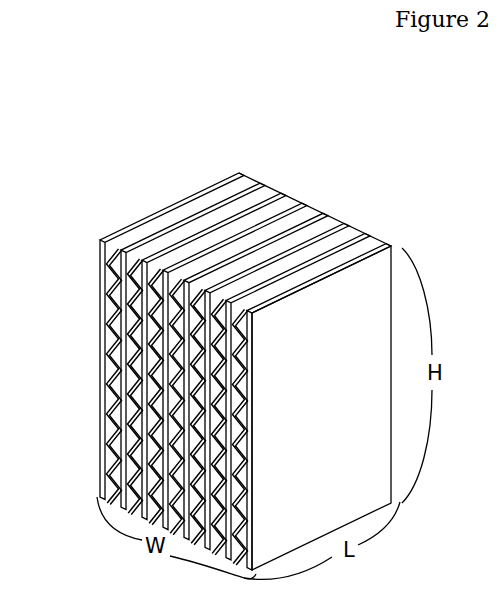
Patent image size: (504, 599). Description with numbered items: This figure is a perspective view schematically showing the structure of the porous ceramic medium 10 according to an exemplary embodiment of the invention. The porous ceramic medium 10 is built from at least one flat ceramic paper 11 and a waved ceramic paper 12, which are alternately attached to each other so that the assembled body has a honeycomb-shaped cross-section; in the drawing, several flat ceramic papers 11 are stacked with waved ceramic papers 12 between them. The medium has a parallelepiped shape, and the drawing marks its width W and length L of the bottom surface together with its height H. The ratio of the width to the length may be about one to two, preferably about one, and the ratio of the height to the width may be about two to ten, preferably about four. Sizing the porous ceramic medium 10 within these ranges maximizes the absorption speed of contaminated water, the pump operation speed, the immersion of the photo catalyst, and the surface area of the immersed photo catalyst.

The porous ceramic medium 10 is at (156, 160).
The flat ceramic paper 11 is at (102, 268).
The waved ceramic paper 12 is at (115, 318).